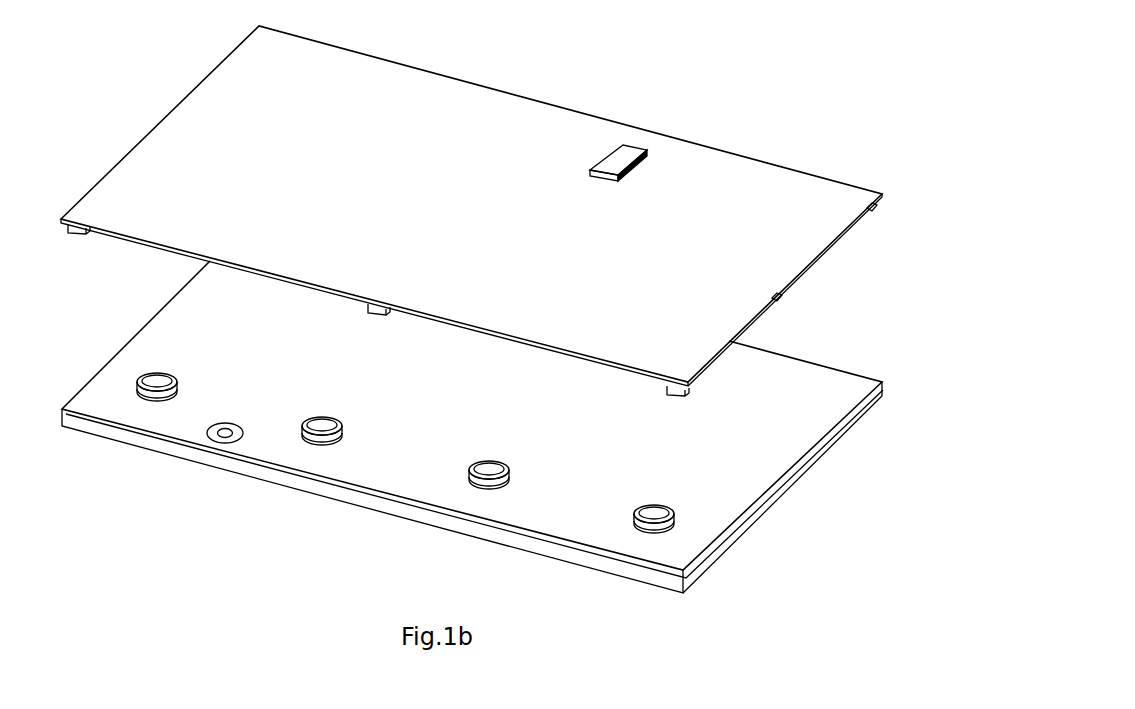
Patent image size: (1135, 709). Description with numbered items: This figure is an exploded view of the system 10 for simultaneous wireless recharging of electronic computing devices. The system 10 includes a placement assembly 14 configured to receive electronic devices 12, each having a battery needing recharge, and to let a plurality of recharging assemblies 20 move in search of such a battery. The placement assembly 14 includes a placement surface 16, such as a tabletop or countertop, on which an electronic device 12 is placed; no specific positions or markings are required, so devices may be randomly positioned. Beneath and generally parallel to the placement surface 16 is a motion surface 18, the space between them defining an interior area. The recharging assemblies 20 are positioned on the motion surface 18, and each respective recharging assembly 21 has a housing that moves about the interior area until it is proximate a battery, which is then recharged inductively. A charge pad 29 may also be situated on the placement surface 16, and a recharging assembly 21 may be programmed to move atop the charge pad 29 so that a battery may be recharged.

The system 10 is at (834, 84).
The electronic device 12 is at (622, 158).
The placement assembly 14 is at (870, 320).
The placement surface 16 is at (753, 178).
The motion surface 18 is at (187, 320).
The recharging assemblies 20 is at (609, 453).
The recharging assembly 21 is at (399, 507).
The charge pad 29 is at (237, 424).